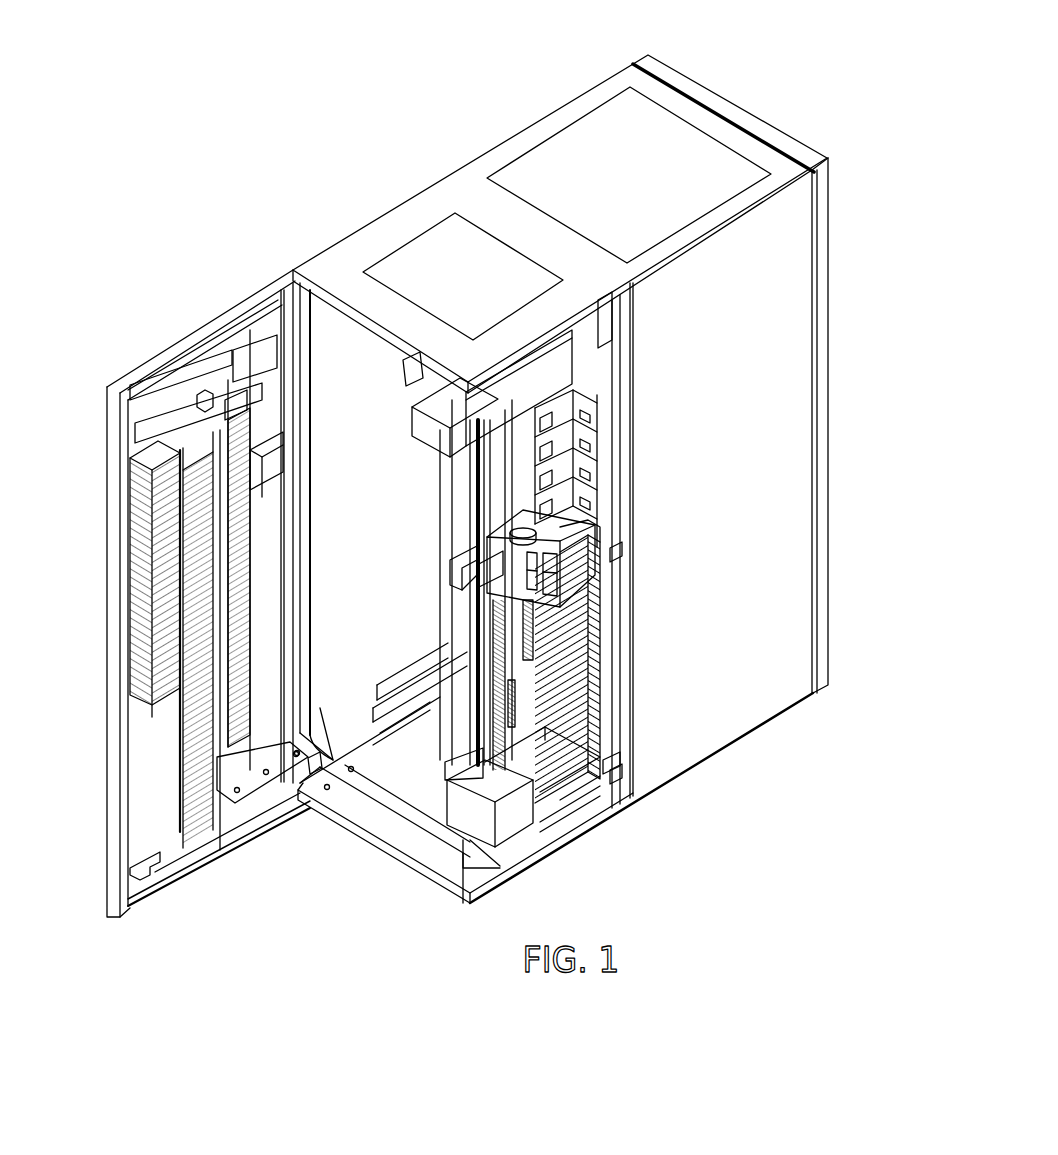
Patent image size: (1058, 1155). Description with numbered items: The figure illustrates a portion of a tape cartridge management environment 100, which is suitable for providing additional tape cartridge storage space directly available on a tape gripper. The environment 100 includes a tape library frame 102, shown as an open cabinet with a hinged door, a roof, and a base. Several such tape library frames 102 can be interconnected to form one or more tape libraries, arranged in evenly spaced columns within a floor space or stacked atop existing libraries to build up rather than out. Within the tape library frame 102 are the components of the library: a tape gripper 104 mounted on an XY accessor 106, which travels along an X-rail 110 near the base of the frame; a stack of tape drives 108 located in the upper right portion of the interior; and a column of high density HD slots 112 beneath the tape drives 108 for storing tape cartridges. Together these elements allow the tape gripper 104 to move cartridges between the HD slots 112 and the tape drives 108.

The tape cartridge management environment 100 is at (160, 192).
The tape library frame 102 is at (467, 486).
The tape gripper 104 is at (497, 530).
The XY accessor 106 is at (445, 570).
The tape drives 108 is at (592, 503).
The X-rail 110 is at (404, 663).
The HD slots 112 is at (597, 645).